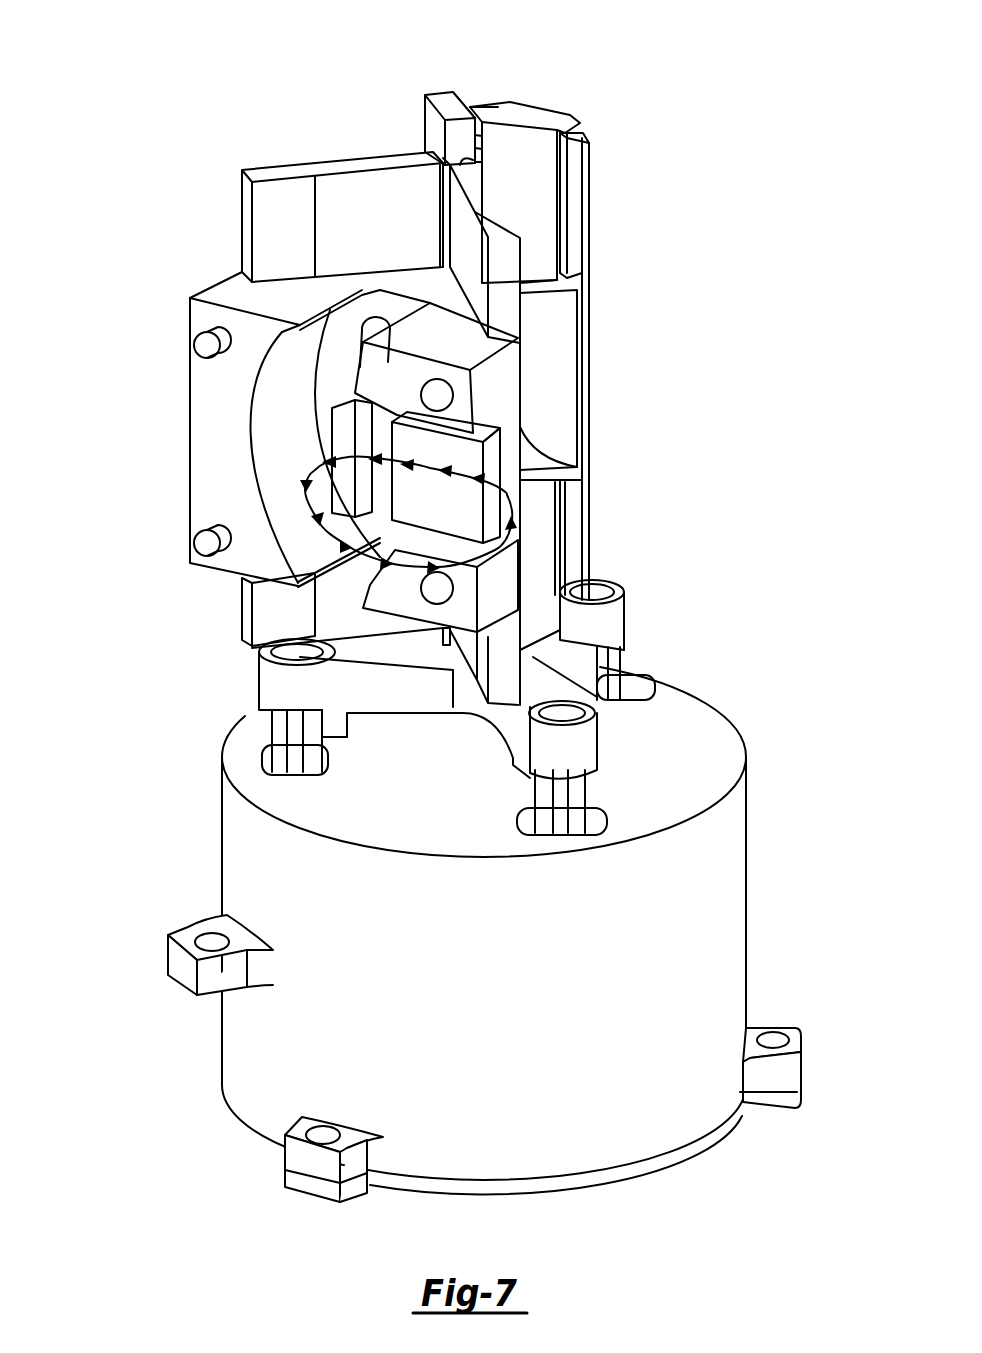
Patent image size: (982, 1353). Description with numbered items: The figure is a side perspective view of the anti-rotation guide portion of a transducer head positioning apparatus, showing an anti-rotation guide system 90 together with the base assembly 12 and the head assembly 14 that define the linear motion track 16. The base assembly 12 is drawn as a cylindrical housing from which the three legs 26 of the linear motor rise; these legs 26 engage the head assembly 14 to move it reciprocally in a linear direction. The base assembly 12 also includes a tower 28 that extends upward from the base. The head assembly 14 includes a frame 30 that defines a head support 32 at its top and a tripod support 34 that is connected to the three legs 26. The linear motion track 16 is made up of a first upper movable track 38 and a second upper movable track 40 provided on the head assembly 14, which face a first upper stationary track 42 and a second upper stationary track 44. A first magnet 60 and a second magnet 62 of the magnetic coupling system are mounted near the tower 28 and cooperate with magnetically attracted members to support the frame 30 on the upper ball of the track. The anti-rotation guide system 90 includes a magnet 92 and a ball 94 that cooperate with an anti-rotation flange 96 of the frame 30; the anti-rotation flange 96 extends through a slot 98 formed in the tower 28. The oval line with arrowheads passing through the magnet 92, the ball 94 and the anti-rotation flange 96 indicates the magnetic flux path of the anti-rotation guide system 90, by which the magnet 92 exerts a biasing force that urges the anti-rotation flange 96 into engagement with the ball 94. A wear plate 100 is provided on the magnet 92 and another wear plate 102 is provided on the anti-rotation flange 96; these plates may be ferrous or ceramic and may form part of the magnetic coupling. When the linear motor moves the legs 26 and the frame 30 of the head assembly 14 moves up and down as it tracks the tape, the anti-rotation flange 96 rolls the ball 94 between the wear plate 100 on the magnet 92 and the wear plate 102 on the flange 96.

The base assembly 12 is at (704, 895).
The head assembly 14 is at (596, 196).
The linear motion track 16 is at (484, 94).
The legs 26 is at (270, 728).
The tower 28 is at (205, 398).
The frame 30 is at (582, 326).
The head support 32 is at (535, 105).
The tripod support 34 is at (573, 612).
The first upper movable track 38 is at (485, 148).
The second upper movable track 40 is at (452, 130).
The first upper stationary track 42 is at (457, 160).
The second upper stationary track 44 is at (441, 160).
The first magnet 60 is at (455, 238).
The second magnet 62 is at (326, 192).
The anti-rotation guide system 90 is at (216, 496).
The magnet 92 is at (470, 458).
The ball 94 is at (382, 480).
The anti-rotation flange 96 is at (355, 392).
The slot 98 is at (362, 362).
The wear plate 100 is at (380, 427).
The wear plate 102 is at (386, 432).